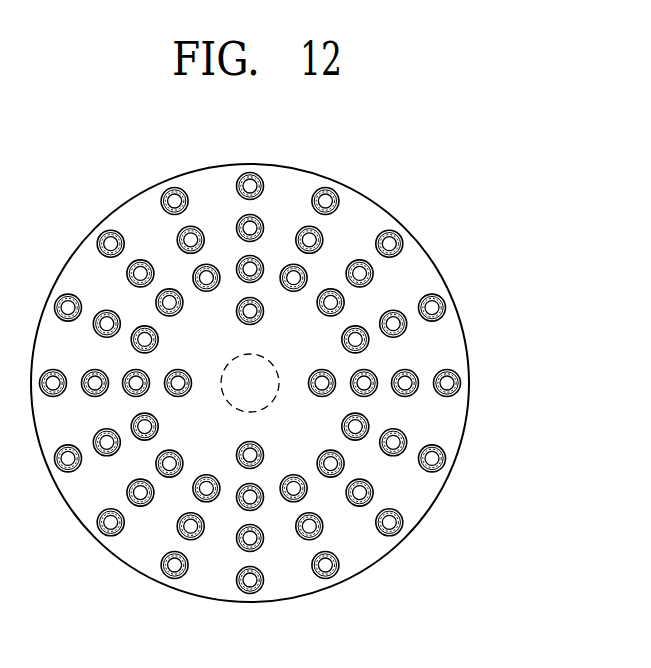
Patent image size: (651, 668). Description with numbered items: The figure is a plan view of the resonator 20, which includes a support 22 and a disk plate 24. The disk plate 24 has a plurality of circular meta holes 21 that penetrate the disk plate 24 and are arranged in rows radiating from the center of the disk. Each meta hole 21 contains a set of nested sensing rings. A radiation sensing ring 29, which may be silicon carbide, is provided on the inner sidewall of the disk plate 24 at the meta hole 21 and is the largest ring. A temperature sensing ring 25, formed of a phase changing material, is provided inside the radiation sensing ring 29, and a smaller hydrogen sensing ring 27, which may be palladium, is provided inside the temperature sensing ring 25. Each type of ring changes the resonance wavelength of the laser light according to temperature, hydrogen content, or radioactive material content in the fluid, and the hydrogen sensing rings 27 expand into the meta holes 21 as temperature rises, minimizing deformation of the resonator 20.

The resonator 20 is at (309, 377).
The meta holes 21 is at (387, 243).
The support 22 is at (273, 378).
The disk plate 24 is at (448, 342).
The temperature sensing rings 25 is at (477, 306).
The hydrogen sensing rings 27 is at (445, 307).
The radiation sensing rings 29 is at (477, 293).